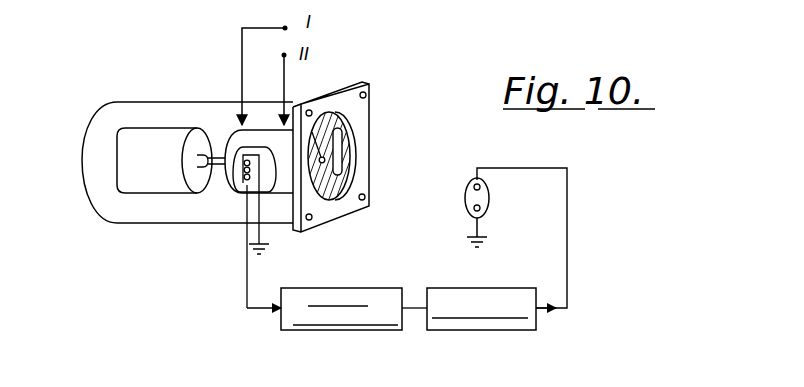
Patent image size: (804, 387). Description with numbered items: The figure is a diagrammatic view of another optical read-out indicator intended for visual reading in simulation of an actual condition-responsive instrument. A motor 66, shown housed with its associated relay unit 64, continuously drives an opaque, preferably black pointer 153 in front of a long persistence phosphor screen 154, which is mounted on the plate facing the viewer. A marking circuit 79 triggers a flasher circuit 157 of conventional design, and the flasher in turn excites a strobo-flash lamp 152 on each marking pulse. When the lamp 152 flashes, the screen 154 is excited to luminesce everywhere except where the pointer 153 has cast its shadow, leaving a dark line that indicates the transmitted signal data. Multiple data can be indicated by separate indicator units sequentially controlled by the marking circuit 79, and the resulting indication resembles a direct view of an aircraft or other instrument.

The motor 66 is at (117, 175).
The relay housing with coil 64 is at (225, 193).
The pointer 153 is at (371, 150).
The long persistence phosphor screen 154 is at (352, 147).
The strobo-flash lamp 152 is at (489, 198).
The marking circuit 79 is at (304, 330).
The flasher 157 is at (481, 330).